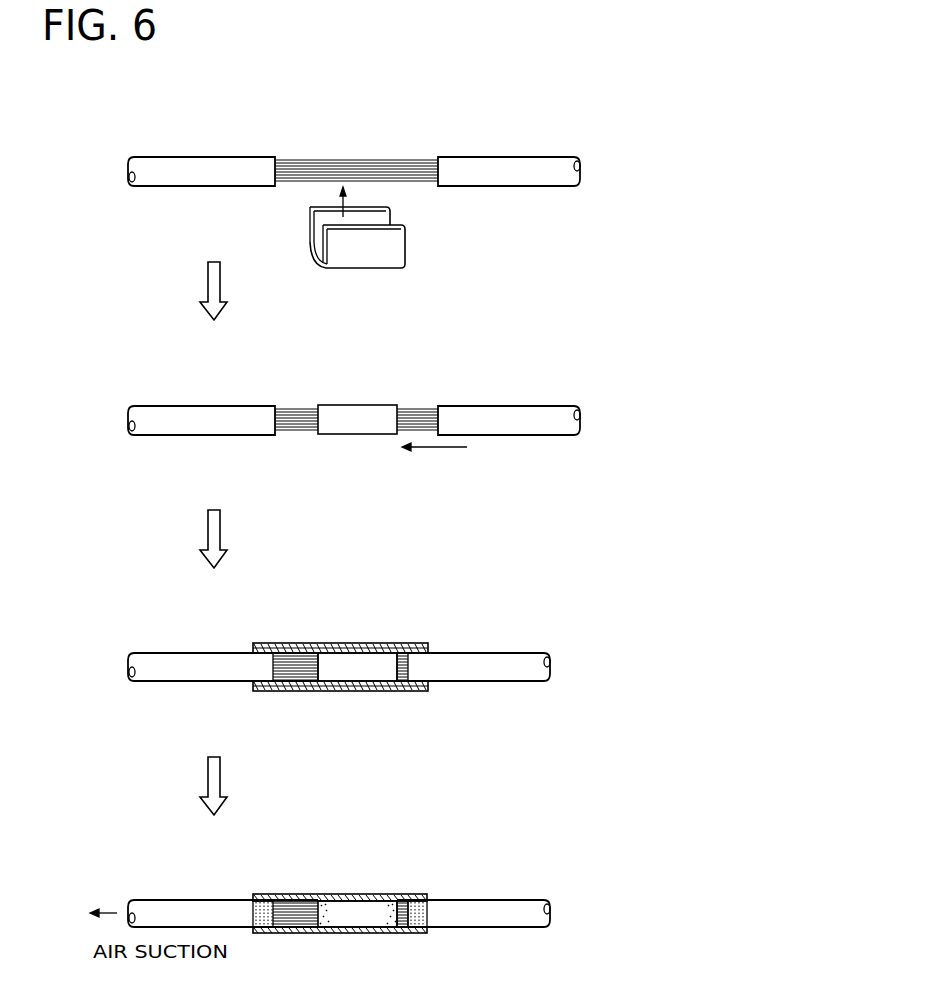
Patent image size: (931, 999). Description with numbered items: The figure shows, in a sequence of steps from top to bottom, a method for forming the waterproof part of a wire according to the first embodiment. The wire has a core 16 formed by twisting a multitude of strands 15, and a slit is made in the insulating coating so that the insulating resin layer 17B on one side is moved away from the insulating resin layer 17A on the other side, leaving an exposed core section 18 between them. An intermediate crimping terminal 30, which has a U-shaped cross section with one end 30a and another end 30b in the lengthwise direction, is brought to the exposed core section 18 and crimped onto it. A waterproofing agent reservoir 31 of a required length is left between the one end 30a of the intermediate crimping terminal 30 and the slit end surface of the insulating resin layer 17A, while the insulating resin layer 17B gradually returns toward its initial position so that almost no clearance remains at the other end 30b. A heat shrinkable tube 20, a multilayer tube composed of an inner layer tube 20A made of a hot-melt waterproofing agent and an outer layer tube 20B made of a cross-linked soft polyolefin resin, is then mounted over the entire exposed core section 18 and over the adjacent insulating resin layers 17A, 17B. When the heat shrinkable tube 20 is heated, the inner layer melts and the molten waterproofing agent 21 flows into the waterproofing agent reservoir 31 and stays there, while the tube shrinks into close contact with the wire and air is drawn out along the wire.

The strands 15 is at (397, 162).
The core 16 is at (412, 111).
The insulating resin layer 17A is at (213, 157).
The insulating resin layer 17B is at (523, 157).
The exposed core section 18 is at (370, 161).
The heat shrinkable tube 20 is at (393, 598).
The inner layer tube 20A is at (428, 652).
The outer layer tube 20B is at (398, 643).
The molten waterproofing agent 21 is at (270, 893).
The intermediate crimping terminal 30 is at (400, 238).
The one end of the intermediate crimping terminal 30a is at (312, 253).
The another end of the intermediate crimping terminal 30b is at (389, 211).
The waterproofing agent reservoir 31 is at (283, 435).